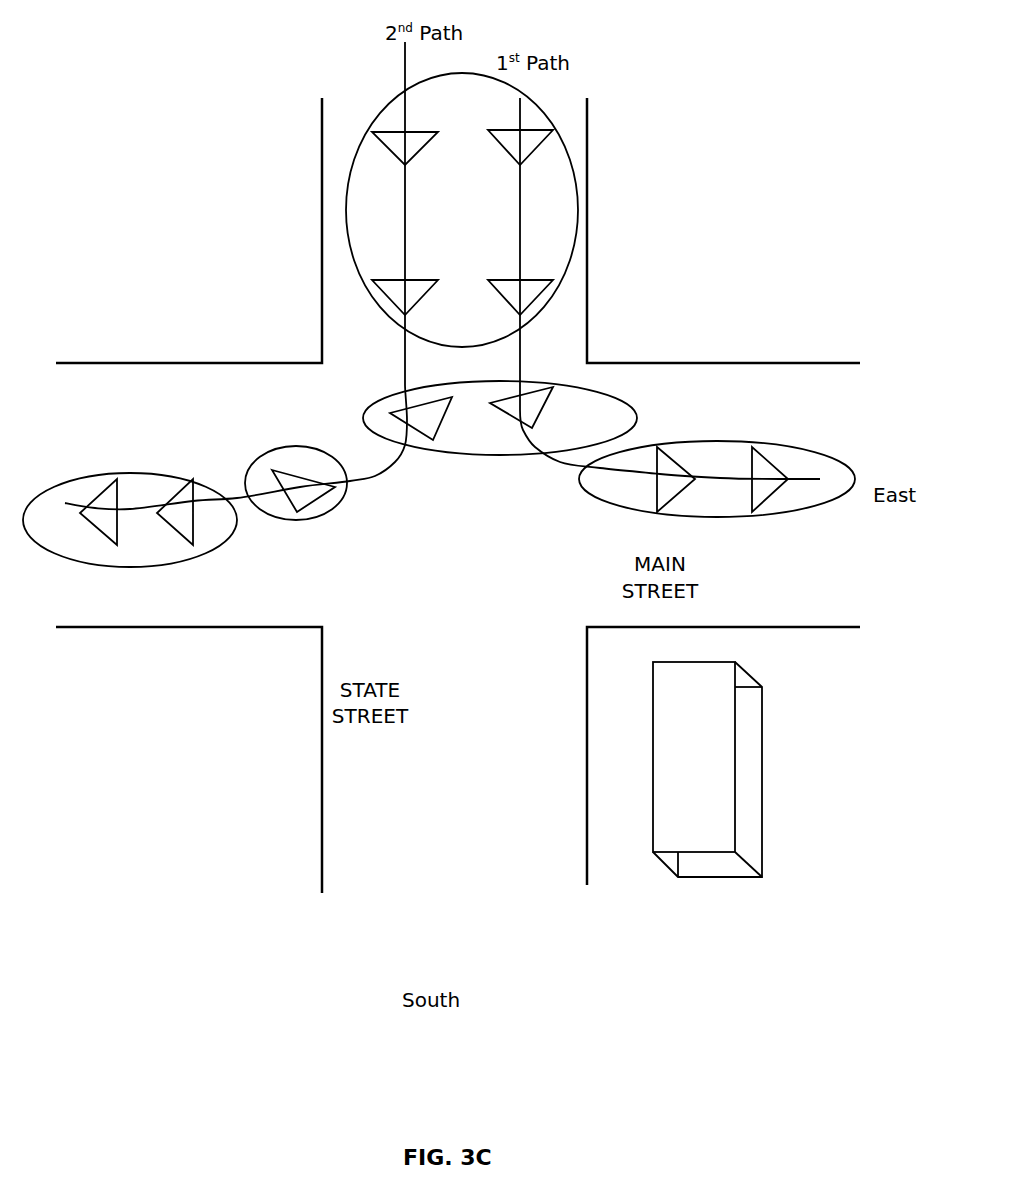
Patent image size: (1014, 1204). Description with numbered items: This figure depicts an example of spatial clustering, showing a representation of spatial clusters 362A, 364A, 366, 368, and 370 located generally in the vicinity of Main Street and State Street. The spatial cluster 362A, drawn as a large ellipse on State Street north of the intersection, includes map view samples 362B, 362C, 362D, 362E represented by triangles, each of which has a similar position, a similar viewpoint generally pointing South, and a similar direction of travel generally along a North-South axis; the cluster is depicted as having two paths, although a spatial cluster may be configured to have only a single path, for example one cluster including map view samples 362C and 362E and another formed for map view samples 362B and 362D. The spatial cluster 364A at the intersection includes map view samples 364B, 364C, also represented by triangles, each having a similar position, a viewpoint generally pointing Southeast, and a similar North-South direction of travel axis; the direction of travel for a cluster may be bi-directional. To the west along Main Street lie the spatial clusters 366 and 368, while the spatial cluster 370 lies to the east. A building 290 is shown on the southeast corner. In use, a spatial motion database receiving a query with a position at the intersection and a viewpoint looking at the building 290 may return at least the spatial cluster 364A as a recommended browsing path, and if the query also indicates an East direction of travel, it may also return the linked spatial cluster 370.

The building 290 is at (707, 769).
The spatial cluster 362A is at (460, 214).
The map view sample 362B is at (406, 166).
The map view sample 362C is at (512, 152).
The map view sample 362D is at (413, 280).
The map view sample 362E is at (488, 280).
The spatial cluster 364A is at (471, 437).
The map view sample 364B is at (508, 417).
The map view sample 364C is at (392, 410).
The spatial cluster 366 is at (308, 525).
The spatial cluster 368 is at (117, 560).
The spatial cluster 370 is at (615, 507).